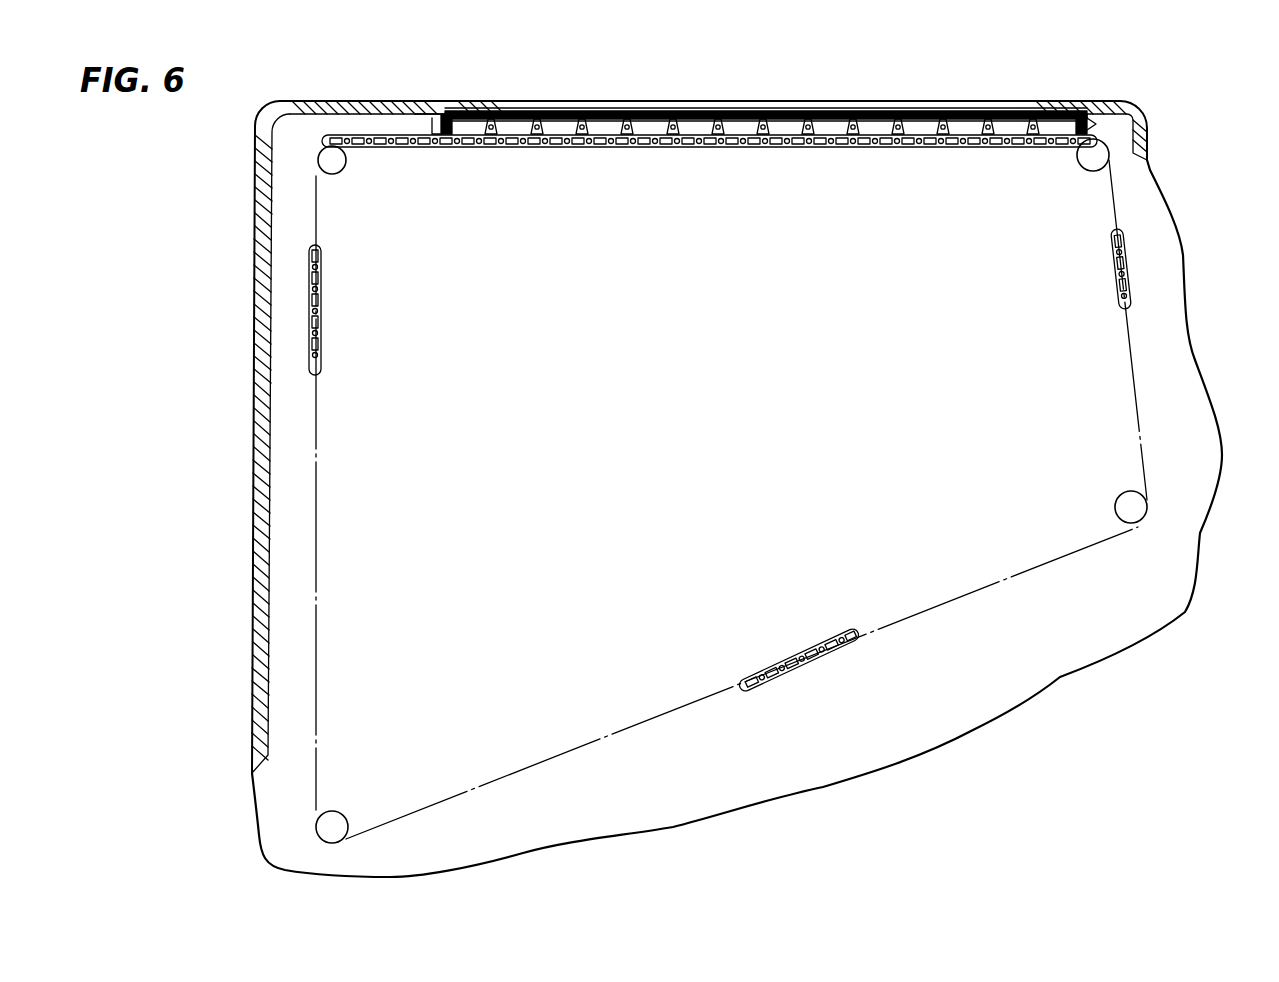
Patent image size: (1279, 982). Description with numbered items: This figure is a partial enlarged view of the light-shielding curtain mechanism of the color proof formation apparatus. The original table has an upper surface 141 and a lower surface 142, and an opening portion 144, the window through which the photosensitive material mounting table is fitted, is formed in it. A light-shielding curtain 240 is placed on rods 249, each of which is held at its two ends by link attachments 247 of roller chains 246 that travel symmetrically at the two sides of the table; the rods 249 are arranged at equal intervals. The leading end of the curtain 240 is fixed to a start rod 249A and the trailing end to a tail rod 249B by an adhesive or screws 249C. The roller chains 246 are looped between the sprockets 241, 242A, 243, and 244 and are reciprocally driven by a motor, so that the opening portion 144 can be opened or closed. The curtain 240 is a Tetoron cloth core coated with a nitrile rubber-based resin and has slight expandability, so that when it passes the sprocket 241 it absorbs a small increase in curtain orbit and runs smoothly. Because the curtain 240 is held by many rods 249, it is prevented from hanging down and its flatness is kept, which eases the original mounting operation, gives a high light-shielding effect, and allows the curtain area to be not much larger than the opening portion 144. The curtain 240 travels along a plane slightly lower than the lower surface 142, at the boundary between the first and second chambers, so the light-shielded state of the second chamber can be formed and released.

The upper surface 141 is at (335, 103).
The lower surface 142 is at (425, 122).
The opening portion 144 is at (497, 110).
The light-shielding curtain 240 is at (642, 115).
The sprocket 241 is at (343, 173).
The sprocket 242A is at (330, 818).
The sprocket 243 is at (1122, 505).
The sprocket 244 is at (1087, 160).
The roller chain 246 is at (788, 150).
The link attachment 247 is at (570, 128).
The rod 249 is at (720, 127).
The start rod 249A is at (440, 127).
The tail rod 249B is at (1093, 123).
The screws 249C is at (447, 122).